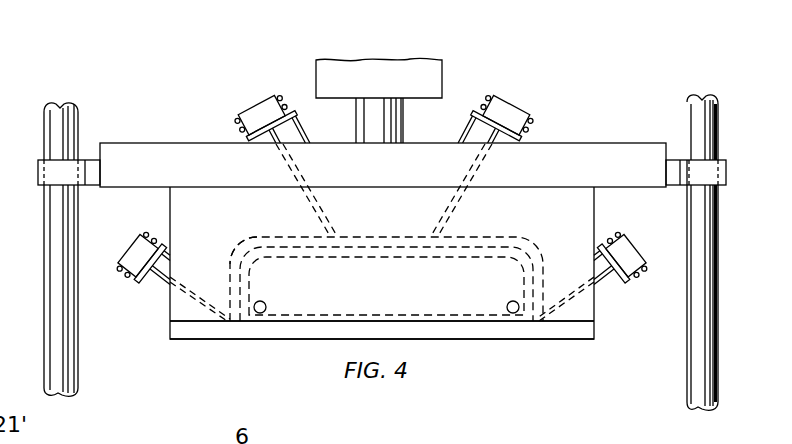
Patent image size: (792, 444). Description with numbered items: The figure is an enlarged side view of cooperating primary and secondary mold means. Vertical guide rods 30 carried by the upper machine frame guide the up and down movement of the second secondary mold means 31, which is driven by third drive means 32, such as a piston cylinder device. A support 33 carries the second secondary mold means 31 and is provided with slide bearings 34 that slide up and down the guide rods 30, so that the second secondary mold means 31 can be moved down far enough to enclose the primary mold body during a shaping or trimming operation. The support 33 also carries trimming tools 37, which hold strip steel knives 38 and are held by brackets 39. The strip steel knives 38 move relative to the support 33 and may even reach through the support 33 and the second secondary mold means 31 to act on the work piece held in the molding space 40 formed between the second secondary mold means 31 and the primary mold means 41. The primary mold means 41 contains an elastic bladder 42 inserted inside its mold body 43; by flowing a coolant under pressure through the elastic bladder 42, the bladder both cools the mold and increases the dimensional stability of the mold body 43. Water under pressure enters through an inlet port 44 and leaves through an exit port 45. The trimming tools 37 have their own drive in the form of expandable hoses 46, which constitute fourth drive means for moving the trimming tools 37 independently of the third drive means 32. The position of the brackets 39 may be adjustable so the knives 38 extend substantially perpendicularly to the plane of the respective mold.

The guide rods 30 is at (78, 361).
The second secondary mold means 31 is at (594, 212).
The third drive means 32 is at (405, 68).
The support 33 is at (589, 151).
The slide bearings 34 is at (56, 174).
The trimming tools 37 is at (262, 108).
The strip steel knives 38 is at (318, 216).
The brackets 39 is at (301, 134).
The molding space 40 is at (410, 238).
The primary mold means 41 is at (452, 329).
The elastic bladder 42 is at (317, 311).
The mold body 43 is at (270, 245).
The inlet port 44 is at (267, 306).
The exit port 45 is at (507, 306).
The expandable hoses 46 is at (235, 128).